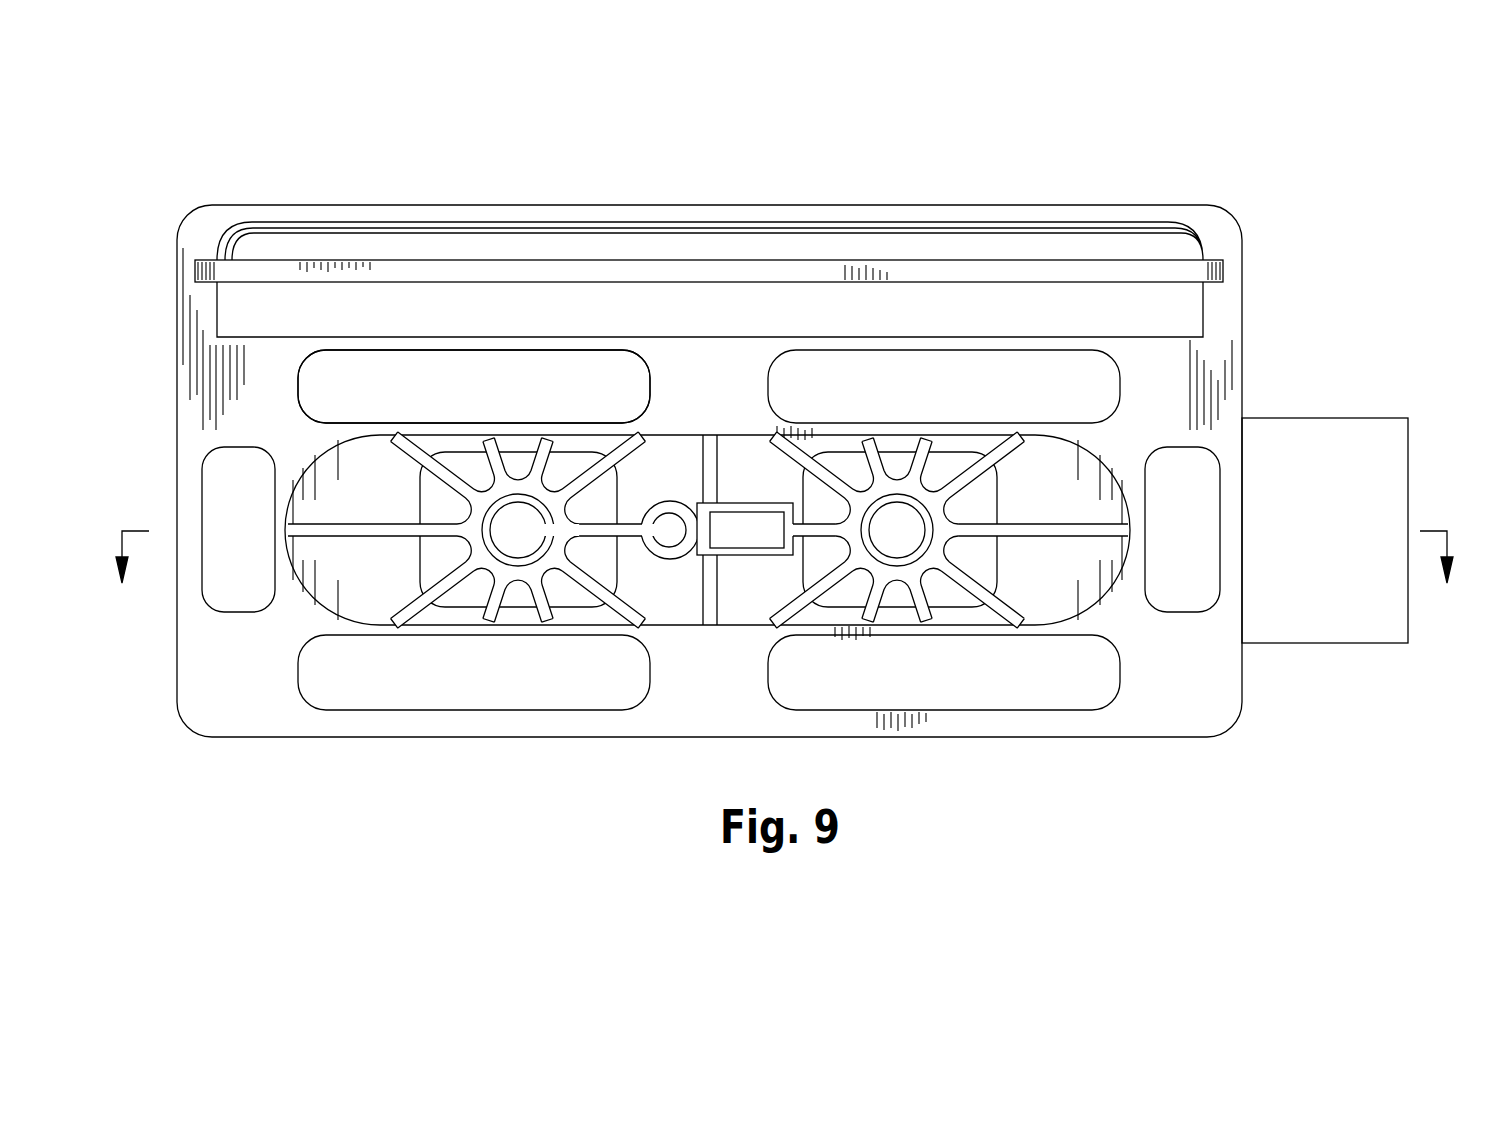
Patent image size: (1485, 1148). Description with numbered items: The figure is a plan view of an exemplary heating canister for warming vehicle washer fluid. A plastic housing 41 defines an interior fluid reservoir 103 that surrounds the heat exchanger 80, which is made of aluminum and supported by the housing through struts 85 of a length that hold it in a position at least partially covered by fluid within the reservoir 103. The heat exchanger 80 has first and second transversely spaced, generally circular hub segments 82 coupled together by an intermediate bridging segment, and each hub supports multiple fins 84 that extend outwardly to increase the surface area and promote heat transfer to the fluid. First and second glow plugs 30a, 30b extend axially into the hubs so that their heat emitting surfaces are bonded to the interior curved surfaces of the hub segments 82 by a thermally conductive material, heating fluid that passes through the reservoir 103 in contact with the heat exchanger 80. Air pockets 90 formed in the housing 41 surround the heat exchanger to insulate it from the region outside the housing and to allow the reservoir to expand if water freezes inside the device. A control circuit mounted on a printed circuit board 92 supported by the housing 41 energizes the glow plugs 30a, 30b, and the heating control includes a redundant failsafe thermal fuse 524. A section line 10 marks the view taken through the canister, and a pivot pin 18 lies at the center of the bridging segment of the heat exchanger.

The section line 10- 10 is at (784, 573).
The pivot pin 18 is at (672, 533).
The first glow plug 30a is at (515, 520).
The second glow plug 30b is at (1042, 608).
The housing 41 is at (1180, 678).
The heat exchanger 80 is at (707, 476).
The hub segment 82 is at (942, 520).
The fins 84 is at (998, 438).
The struts 85 is at (1017, 538).
The air pockets 90 is at (428, 385).
The printed circuit board 92 is at (1138, 273).
The fluid reservoir 103 is at (363, 583).
The thermal fuse 524 is at (747, 533).